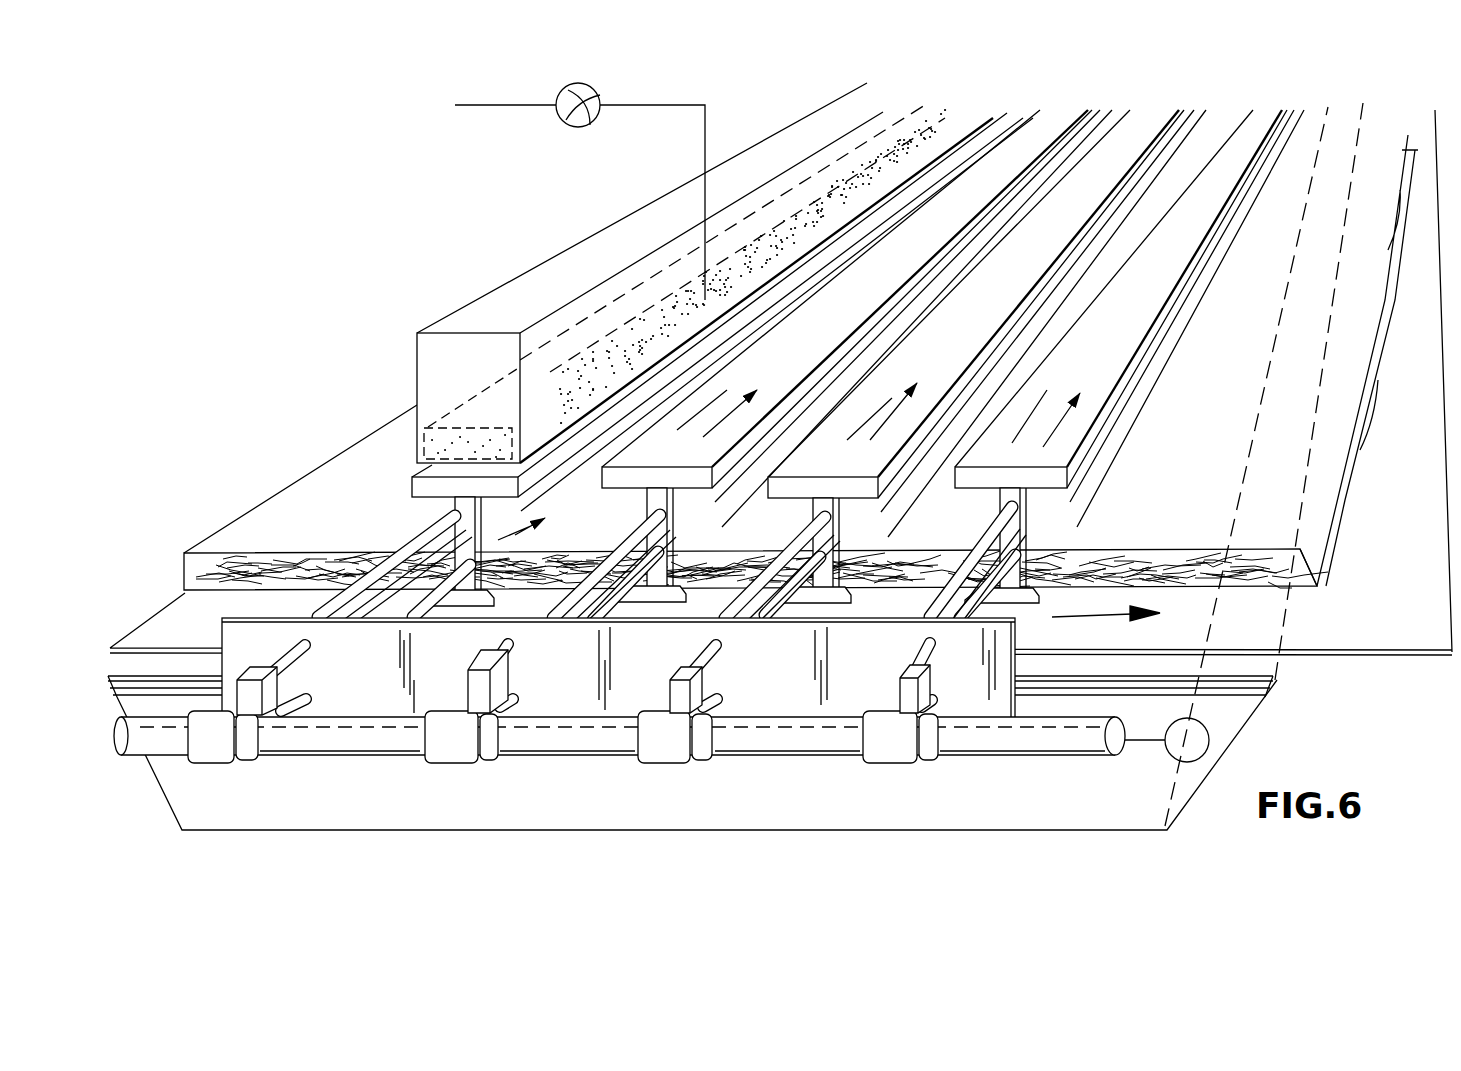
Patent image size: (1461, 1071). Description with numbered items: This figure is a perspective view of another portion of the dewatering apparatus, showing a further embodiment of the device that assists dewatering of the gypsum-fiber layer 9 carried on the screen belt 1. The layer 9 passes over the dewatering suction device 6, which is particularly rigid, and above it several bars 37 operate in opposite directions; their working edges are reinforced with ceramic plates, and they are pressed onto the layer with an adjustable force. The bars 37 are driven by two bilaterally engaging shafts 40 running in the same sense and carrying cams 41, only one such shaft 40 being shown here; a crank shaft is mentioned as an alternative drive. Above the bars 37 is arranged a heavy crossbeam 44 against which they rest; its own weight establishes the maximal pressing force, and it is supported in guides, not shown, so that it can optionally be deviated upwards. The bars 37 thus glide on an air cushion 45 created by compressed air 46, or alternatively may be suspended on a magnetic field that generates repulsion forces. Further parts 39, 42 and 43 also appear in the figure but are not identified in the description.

The screen belt 1 is at (1390, 652).
The dewatering suction device 6 is at (1233, 690).
The gypsum-fiber layer 9 is at (1348, 432).
The bars 37 is at (410, 485).
The fibrous material layer 39 is at (375, 565).
The shafts 40 is at (788, 748).
The cams 41 is at (220, 752).
The lever arm 42 is at (270, 690).
The elongated beam 43 is at (1090, 360).
The crossbeam 44 is at (557, 270).
The air cushion 45 is at (447, 440).
The compressed air 46 is at (598, 96).